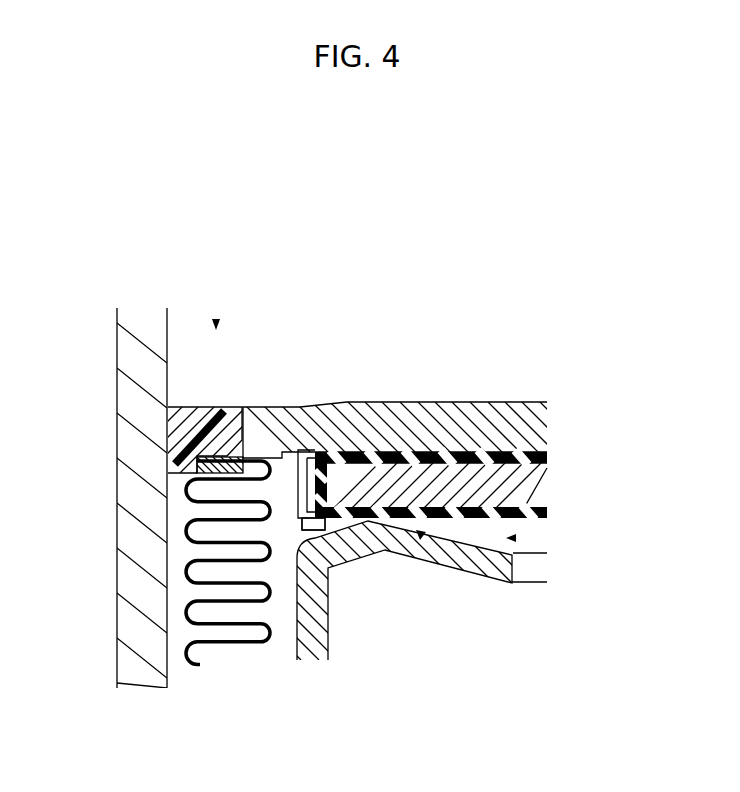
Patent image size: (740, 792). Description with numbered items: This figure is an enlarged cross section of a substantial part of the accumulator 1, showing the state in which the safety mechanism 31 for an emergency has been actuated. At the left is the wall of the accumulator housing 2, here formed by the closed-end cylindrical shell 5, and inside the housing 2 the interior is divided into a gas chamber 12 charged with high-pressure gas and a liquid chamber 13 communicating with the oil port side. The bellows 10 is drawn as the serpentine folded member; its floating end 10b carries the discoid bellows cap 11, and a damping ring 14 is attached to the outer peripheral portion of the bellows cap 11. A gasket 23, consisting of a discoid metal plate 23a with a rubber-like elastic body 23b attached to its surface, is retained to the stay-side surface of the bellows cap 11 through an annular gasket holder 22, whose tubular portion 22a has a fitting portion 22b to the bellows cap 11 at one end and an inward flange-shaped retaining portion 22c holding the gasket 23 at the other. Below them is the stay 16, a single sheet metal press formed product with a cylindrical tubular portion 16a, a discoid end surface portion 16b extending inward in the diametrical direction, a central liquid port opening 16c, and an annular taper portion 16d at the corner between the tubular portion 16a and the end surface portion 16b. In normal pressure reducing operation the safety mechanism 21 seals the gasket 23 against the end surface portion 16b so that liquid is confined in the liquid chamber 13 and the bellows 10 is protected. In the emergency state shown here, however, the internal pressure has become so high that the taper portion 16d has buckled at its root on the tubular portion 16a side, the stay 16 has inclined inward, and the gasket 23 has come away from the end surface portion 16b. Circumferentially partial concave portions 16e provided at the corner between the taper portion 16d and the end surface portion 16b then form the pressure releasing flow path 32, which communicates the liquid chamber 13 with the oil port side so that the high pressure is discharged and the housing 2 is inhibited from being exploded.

The accumulator 1 is at (216, 322).
The accumulator housing 2 is at (162, 340).
The shell 5 is at (190, 405).
The bellows 10 is at (205, 615).
The floating end 10b is at (178, 452).
The bellows cap 11 is at (478, 428).
The gas chamber 12 is at (366, 251).
The liquid chamber 13 is at (270, 574).
The damping ring 14 is at (182, 422).
The stay 16 is at (315, 606).
The tubular portion 16a is at (325, 645).
The end surface portion 16b is at (467, 557).
The liquid port opening 16c is at (540, 567).
The taper portion 16d is at (355, 552).
The concave portions 16e is at (388, 522).
The safety mechanism for a pressure reducing time 21 is at (514, 538).
The gasket holder 22 is at (186, 508).
The tubular portion 22a is at (205, 469).
The fitting portion 22b is at (288, 450).
The retaining portion 22c is at (304, 530).
The gasket 23 is at (522, 503).
The metal plate 23a is at (517, 449).
The rubber-like elastic body 23b is at (548, 512).
The safety mechanism for an emergency 31 is at (422, 538).
The pressure releasing flow path 32 is at (402, 512).